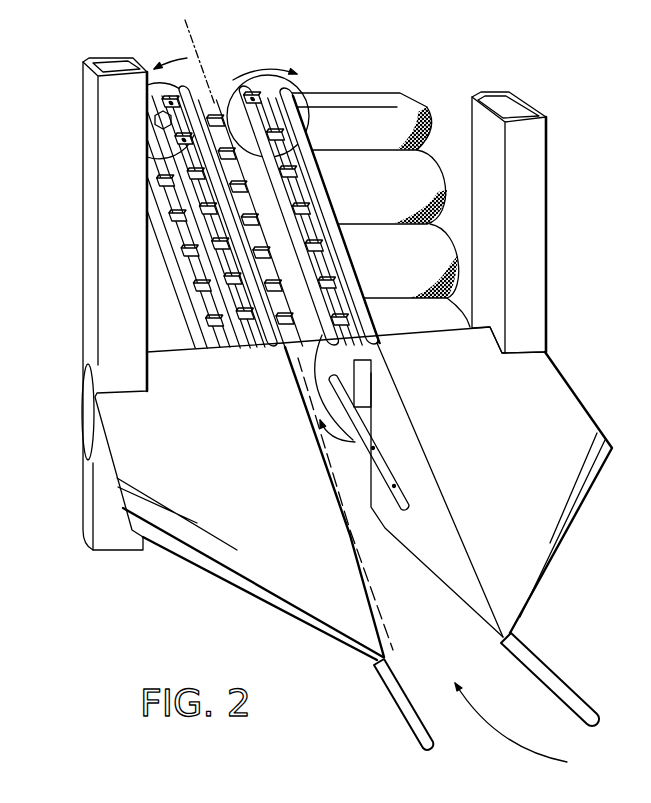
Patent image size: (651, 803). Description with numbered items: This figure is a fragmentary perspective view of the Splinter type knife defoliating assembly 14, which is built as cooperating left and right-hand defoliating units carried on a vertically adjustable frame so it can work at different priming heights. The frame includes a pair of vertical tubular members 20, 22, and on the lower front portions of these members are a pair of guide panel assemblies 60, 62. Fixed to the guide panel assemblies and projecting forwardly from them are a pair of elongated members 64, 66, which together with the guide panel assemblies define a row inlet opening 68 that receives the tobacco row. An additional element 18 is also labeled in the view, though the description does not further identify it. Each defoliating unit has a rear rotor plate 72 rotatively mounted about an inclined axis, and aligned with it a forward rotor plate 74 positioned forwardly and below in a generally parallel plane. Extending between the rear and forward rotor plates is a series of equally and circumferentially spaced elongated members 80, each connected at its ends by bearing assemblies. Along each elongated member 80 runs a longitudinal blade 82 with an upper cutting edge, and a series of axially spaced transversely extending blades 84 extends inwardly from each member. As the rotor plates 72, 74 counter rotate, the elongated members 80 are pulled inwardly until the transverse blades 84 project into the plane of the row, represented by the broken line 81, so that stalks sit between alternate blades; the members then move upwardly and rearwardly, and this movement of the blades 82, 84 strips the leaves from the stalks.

The defoliating assembly 14 is at (380, 190).
The rolls 18 is at (366, 194).
The vertical tubular member 20 is at (107, 223).
The vertical tubular member 22 is at (525, 247).
The guide panel assembly 60 is at (250, 562).
The guide panel assembly 62 is at (542, 482).
The elongated member 64 is at (403, 697).
The elongated member 66 is at (538, 670).
The row inlet opening 68 is at (525, 729).
The rear rotor plate 72 is at (157, 105).
The forward rotor plate 74 is at (222, 387).
The elongated member 80 is at (217, 200).
The broken line 81 is at (212, 100).
The longitudinal blade 82 is at (198, 100).
The transversely extending blade 84 is at (177, 182).